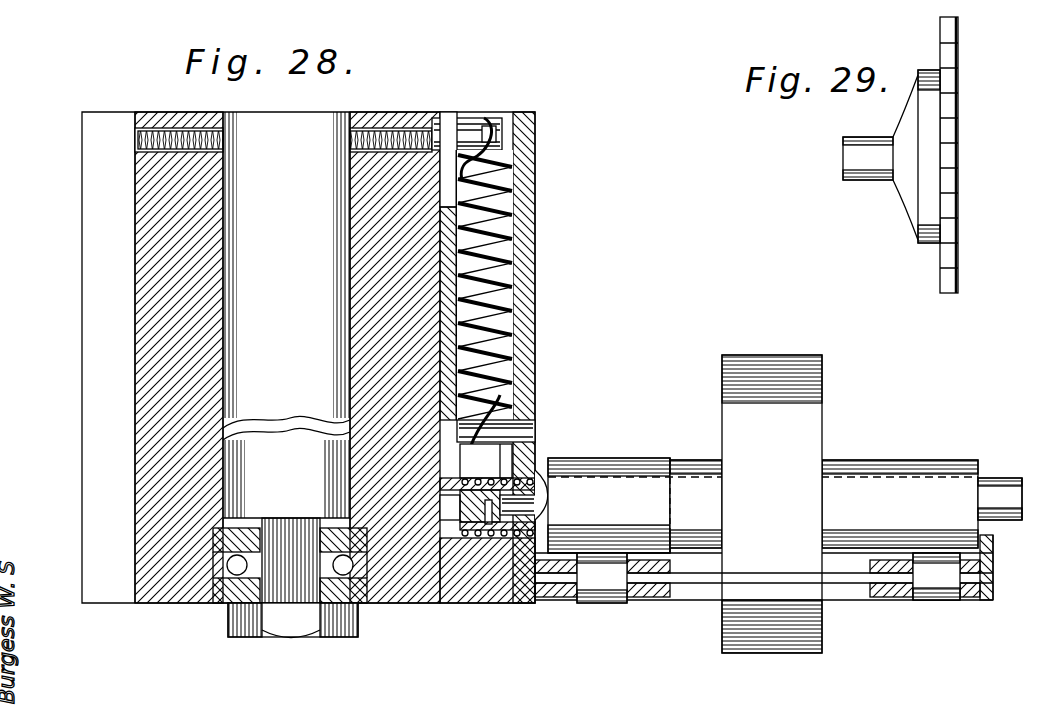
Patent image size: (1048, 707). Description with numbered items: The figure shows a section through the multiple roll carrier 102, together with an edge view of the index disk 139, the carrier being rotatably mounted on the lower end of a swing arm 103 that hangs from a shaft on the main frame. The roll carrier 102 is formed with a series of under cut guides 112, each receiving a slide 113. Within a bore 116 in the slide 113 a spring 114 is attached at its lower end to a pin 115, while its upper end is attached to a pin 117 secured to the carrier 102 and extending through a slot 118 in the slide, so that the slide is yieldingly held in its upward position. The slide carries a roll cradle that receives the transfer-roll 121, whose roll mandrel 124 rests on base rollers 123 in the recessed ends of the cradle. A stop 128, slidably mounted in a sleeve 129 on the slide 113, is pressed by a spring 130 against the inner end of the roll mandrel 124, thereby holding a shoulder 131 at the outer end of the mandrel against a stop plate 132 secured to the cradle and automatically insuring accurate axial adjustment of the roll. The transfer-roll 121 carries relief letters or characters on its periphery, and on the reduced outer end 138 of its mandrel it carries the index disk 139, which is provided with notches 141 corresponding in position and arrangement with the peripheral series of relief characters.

In FIG. 28, the multiple roll carrier 102 is at (368, 122).
In FIG. 28, the swing arm 103 is at (240, 462).
In FIG. 28, the under cut guides 112 is at (84, 228).
In FIG. 28, the slides 113 is at (520, 198).
In FIG. 28, the spring 114 is at (505, 315).
In FIG. 28, the pin 115 is at (482, 420).
In FIG. 28, the bore 116 is at (500, 258).
In FIG. 28, the pins 117 is at (502, 130).
In FIG. 28, the slots 118 is at (448, 112).
In FIG. 28, the transfer-roll 121 is at (815, 398).
In FIG. 28, the base rollers 123 is at (605, 592).
In FIG. 28, the roll mandrel 124 is at (686, 456).
In FIG. 28, the stop 128 is at (540, 492).
In FIG. 28, the sleeve 129 is at (505, 460).
In FIG. 28, the spring 130 is at (470, 448).
In FIG. 28, the shoulder 131 is at (982, 468).
In FIG. 28, the stop plate 132 is at (992, 542).
In FIG. 28, the reduced outer end 138 is at (1012, 492).
In FIG. 29, the reduced outer end 138 is at (872, 180).
In FIG. 29, the index disk 139 is at (956, 142).
In FIG. 29, the notches 141 is at (950, 112).